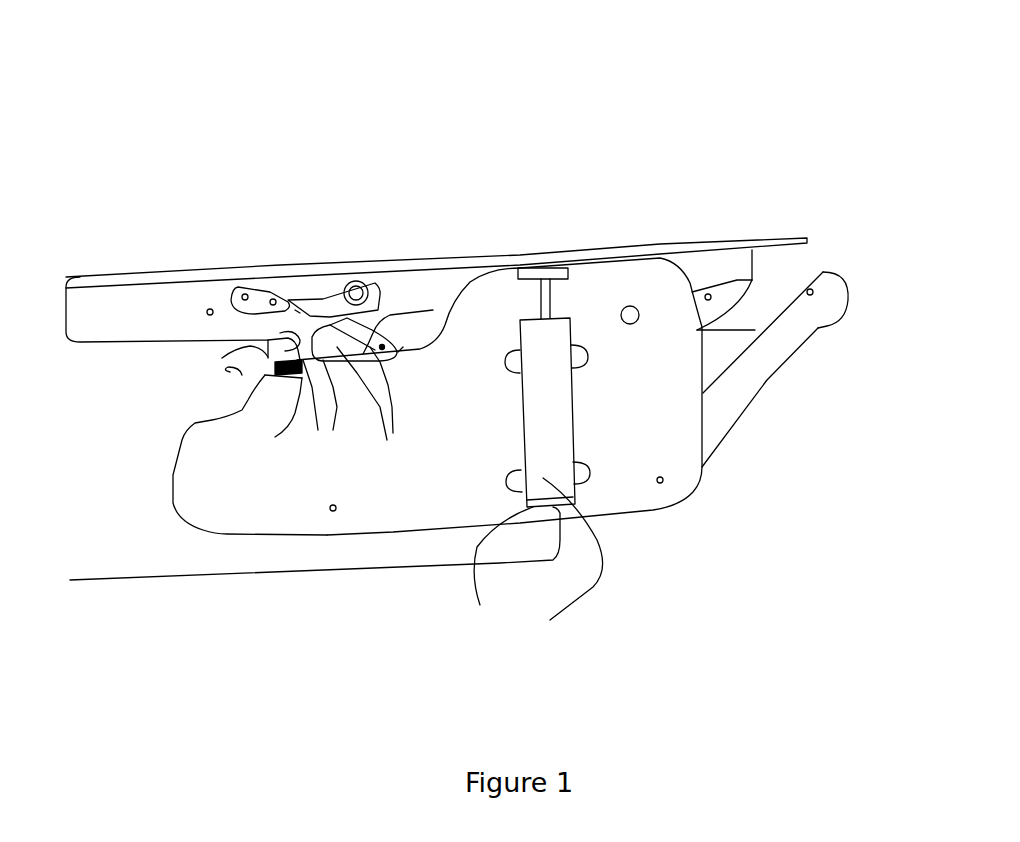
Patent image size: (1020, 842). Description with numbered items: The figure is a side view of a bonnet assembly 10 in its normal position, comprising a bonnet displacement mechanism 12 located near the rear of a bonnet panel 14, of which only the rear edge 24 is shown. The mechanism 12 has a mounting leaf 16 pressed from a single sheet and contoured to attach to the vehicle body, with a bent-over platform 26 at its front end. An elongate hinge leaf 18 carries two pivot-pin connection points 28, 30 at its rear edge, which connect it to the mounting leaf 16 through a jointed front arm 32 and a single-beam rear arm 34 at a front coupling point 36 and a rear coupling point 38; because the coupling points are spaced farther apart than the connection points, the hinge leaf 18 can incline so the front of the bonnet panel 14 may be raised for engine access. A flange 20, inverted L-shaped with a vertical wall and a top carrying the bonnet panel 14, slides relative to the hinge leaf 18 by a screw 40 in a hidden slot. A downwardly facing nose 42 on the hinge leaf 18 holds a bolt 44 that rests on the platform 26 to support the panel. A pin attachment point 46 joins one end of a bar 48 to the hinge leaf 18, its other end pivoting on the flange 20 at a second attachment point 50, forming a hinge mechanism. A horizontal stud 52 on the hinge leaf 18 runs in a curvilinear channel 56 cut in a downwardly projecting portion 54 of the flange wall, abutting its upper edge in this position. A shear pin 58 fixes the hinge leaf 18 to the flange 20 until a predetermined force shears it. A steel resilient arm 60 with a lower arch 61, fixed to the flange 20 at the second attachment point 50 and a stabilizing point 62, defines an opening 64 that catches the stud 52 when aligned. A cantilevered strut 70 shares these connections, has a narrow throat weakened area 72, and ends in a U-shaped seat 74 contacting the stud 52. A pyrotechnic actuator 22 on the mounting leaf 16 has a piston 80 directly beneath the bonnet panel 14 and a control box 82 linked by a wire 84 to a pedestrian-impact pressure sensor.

The bonnet assembly 10 is at (222, 160).
The bonnet displacement mechanism 12 is at (803, 463).
The bonnet panel 14 is at (612, 247).
The mounting leaf 16 is at (630, 470).
The hinge leaf 18 is at (763, 283).
The flange 20 is at (432, 290).
The actuator 22 is at (597, 567).
The rear edge 24 is at (805, 238).
The platform 26 is at (275, 437).
The connection point 28 is at (710, 293).
The connection point 30 is at (810, 295).
The front arm 32 is at (752, 280).
The rear arm 34 is at (735, 422).
The front coupling point 36 is at (334, 511).
The rear coupling point 38 is at (660, 483).
The screw 40 is at (210, 309).
The nose 42 is at (222, 358).
The bolt 44 is at (242, 375).
The attachment point 46 is at (383, 345).
The bar 48 is at (393, 433).
The second attachment point 50 is at (245, 294).
The stud 52 is at (345, 316).
The downwardly projecting portion 54 is at (333, 430).
The channel 56 is at (387, 440).
The shear pin 58 is at (632, 324).
The resilient arm 60 is at (286, 297).
The arch 61 is at (295, 310).
The stabilizing point 62 is at (271, 299).
The opening 64 is at (362, 283).
The strut 70 is at (318, 430).
The weakened area 72 is at (290, 300).
The U-shaped seat 74 is at (403, 347).
The piston 80 is at (547, 297).
The control box 82 is at (478, 600).
The wire 84 is at (437, 567).